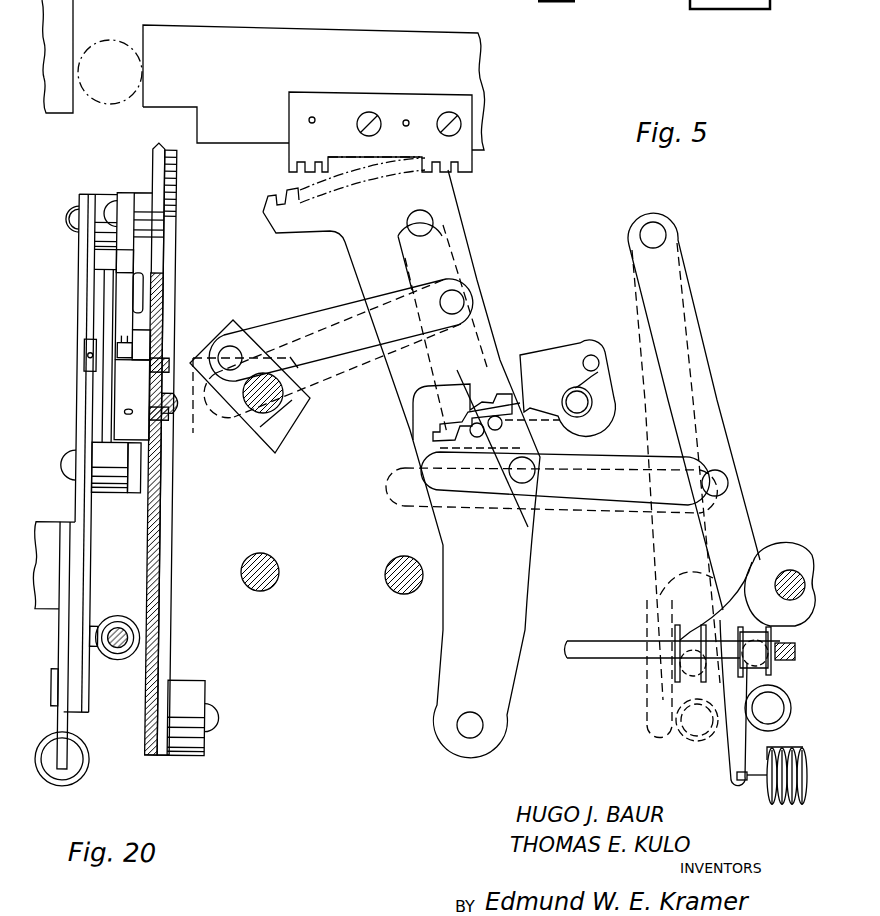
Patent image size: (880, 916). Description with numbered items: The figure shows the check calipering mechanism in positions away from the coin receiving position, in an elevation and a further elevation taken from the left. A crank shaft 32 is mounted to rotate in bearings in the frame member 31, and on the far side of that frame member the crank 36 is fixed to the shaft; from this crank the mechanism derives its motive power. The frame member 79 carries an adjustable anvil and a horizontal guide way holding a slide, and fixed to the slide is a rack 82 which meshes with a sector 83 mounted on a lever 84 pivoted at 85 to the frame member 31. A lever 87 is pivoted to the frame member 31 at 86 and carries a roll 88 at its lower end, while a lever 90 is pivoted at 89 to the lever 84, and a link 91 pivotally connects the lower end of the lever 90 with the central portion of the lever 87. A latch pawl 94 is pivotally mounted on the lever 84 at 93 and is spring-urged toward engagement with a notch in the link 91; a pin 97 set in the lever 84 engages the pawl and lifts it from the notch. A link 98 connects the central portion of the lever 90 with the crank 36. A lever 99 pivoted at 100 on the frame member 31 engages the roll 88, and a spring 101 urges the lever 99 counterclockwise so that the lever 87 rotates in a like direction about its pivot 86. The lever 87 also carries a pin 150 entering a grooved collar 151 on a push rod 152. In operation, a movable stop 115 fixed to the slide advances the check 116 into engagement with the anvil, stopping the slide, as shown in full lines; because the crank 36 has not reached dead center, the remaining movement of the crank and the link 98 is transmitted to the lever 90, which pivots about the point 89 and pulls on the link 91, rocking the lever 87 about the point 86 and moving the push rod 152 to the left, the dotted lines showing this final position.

In FIG. 20, the frame member 31 is at (145, 757).
In FIG. 20, the crank shaft 32 is at (178, 414).
In FIG. 5, the crank shaft 32 is at (270, 403).
In FIG. 20, the crank 36 is at (150, 425).
In FIG. 5, the crank 36 is at (275, 450).
In FIG. 5, the frame member 79 is at (57, 56).
In FIG. 20, the rack 82 is at (173, 158).
In FIG. 5, the rack 82 is at (350, 92).
In FIG. 20, the sector 83 is at (173, 205).
In FIG. 5, the sector 83 is at (297, 190).
In FIG. 20, the lever 84 is at (173, 292).
In FIG. 5, the lever 84 is at (520, 555).
In FIG. 20, the pivot 85 is at (218, 723).
In FIG. 5, the pivot 85 is at (476, 727).
In FIG. 5, the pivot 86 is at (660, 235).
In FIG. 20, the lever 87 is at (84, 402).
In FIG. 5, the lever 87 is at (712, 400).
In FIG. 20, the roll 88 is at (54, 690).
In FIG. 5, the roll 88 is at (667, 742).
In FIG. 5, the pivot 89 is at (425, 222).
In FIG. 20, the lever 90 is at (118, 260).
In FIG. 5, the lever 90 is at (440, 252).
In FIG. 20, the link 91 is at (138, 490).
In FIG. 5, the link 91 is at (590, 492).
In FIG. 5, the pivot 93 is at (562, 420).
In FIG. 20, the latch pawl 94 is at (141, 338).
In FIG. 5, the latch pawl 94 is at (555, 381).
In FIG. 5, the pin 97 is at (515, 420).
In FIG. 20, the link 98 is at (104, 322).
In FIG. 5, the link 98 is at (300, 325).
In FIG. 20, the lever 99 is at (72, 720).
In FIG. 5, the lever 99 is at (718, 752).
In FIG. 5, the pivot 100 is at (780, 584).
In FIG. 20, the spring 101 is at (93, 762).
In FIG. 5, the spring 101 is at (800, 752).
In FIG. 5, the movable stop 115 is at (188, 73).
In FIG. 5, the check 116 is at (108, 103).
In FIG. 20, the pin 150 is at (106, 625).
In FIG. 5, the pin 150 is at (768, 620).
In FIG. 20, the grooved collar 151 is at (139, 613).
In FIG. 5, the grooved collar 151 is at (755, 630).
In FIG. 20, the push rod 152 is at (142, 662).
In FIG. 5, the push rod 152 is at (580, 652).